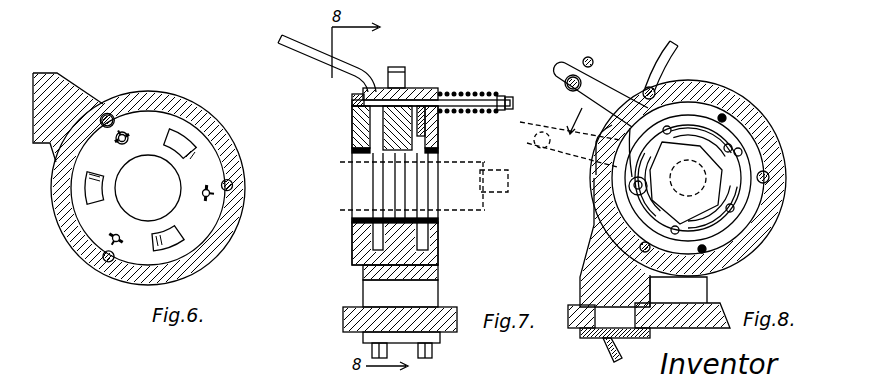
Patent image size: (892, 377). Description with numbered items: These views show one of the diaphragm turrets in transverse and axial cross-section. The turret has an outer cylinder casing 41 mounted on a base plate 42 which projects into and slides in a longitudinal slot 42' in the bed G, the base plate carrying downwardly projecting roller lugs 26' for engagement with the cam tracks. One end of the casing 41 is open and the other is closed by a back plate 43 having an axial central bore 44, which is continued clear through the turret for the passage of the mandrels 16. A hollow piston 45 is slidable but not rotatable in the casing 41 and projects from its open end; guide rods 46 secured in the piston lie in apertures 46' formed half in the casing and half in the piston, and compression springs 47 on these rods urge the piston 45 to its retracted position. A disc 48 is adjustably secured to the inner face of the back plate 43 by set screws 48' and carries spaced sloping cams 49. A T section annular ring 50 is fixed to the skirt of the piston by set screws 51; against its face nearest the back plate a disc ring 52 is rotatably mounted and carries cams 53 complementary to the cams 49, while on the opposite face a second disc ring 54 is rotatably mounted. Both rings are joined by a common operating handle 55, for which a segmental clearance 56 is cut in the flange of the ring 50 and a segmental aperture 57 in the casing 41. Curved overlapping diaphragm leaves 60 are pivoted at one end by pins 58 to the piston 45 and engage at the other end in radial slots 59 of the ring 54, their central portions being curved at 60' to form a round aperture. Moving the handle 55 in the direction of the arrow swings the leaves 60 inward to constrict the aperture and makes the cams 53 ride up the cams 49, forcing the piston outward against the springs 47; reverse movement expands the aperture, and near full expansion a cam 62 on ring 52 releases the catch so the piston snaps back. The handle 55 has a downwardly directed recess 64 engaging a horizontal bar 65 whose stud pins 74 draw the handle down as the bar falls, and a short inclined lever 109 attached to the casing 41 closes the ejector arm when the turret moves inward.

In FIG. 6, the outer cylinder casing 41 is at (178, 94).
In FIG. 7, the outer cylinder casing 41 is at (352, 90).
In FIG. 8, the outer cylinder casing 41 is at (750, 104).
In FIG. 6, the guide rods 46 is at (140, 160).
In FIG. 7, the guide rods 46 is at (521, 101).
In FIG. 8, the guide rods 46 is at (787, 178).
In FIG. 6, the apertures 46' is at (93, 96).
In FIG. 8, the apertures 46' is at (639, 245).
In FIG. 6, the disc 48 is at (176, 224).
In FIG. 6, the set screws 48' is at (134, 103).
In FIG. 6, the sloping cams 49 is at (192, 149).
In FIG. 7, the sloping cams 49 is at (436, 148).
In FIG. 7, the short inclined lever 109 is at (318, 52).
In FIG. 8, the short inclined lever 109 is at (670, 46).
In FIG. 7, the T section annular ring 50 is at (400, 112).
In FIG. 8, the T section annular ring 50 is at (690, 104).
In FIG. 7, the compression springs 47 is at (458, 93).
In FIG. 7, the hollow piston 45 is at (354, 119).
In FIG. 7, the back plate 43 is at (438, 131).
In FIG. 7, the radial slots 59 is at (354, 145).
In FIG. 8, the radial slots 59 is at (742, 160).
In FIG. 7, the mandrels 16 is at (483, 163).
In FIG. 7, the diaphragm leaves 60 is at (350, 187).
In FIG. 8, the diaphragm leaves 60 is at (691, 149).
In FIG. 8, the curved central portions 60' is at (686, 183).
In FIG. 7, the cams 53 is at (432, 175).
In FIG. 7, the cam 62 is at (508, 181).
In FIG. 7, the second disc ring 54 is at (388, 178).
In FIG. 8, the second disc ring 54 is at (728, 232).
In FIG. 7, the disc ring 52 is at (412, 206).
In FIG. 7, the axial central bore 44 is at (439, 219).
In FIG. 7, the pins 58 is at (354, 240).
In FIG. 8, the pins 58 is at (736, 137).
In FIG. 7, the set screws 51 is at (354, 259).
In FIG. 8, the set screws 51 is at (594, 200).
In FIG. 7, the base plate 42 is at (378, 293).
In FIG. 8, the base plate 42 is at (599, 309).
In FIG. 8, the longitudinal slot 42' is at (678, 292).
In FIG. 7, the bed G is at (452, 310).
In FIG. 8, the bed G is at (702, 306).
In FIG. 7, the roller lug 26' is at (445, 351).
In FIG. 8, the roller lug 26' is at (596, 350).
In FIG. 8, the stud pins 74 is at (585, 58).
In FIG. 8, the downwardly directed recess 64 is at (583, 84).
In FIG. 8, the operating handle 55 is at (598, 98).
In FIG. 8, the horizontal bar 65 is at (569, 89).
In FIG. 8, the segmental clearance 56 is at (596, 150).
In FIG. 8, the segmental aperture 57 is at (596, 173).